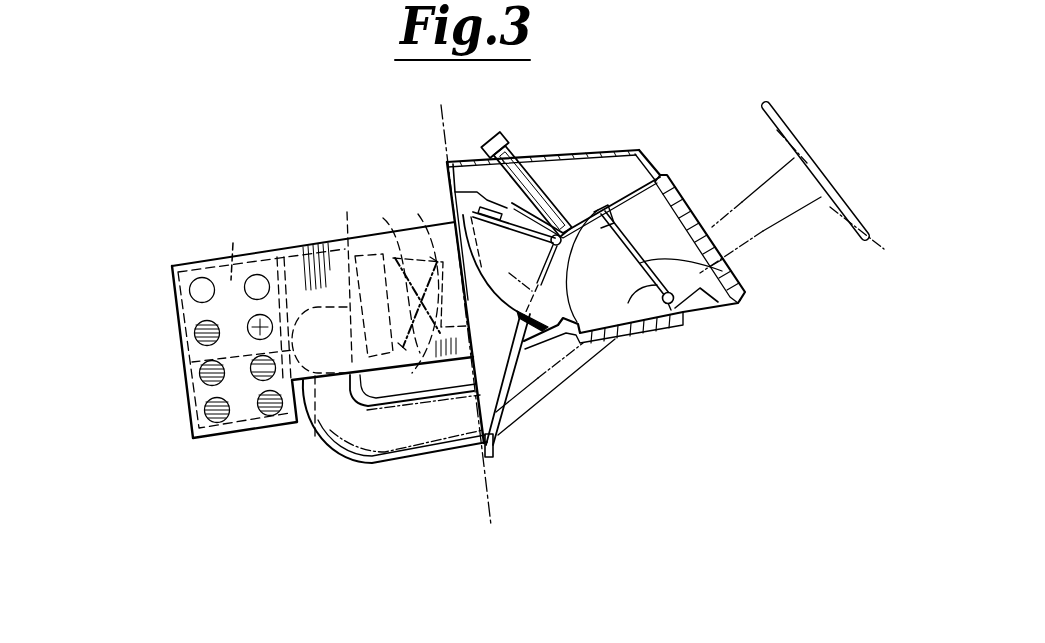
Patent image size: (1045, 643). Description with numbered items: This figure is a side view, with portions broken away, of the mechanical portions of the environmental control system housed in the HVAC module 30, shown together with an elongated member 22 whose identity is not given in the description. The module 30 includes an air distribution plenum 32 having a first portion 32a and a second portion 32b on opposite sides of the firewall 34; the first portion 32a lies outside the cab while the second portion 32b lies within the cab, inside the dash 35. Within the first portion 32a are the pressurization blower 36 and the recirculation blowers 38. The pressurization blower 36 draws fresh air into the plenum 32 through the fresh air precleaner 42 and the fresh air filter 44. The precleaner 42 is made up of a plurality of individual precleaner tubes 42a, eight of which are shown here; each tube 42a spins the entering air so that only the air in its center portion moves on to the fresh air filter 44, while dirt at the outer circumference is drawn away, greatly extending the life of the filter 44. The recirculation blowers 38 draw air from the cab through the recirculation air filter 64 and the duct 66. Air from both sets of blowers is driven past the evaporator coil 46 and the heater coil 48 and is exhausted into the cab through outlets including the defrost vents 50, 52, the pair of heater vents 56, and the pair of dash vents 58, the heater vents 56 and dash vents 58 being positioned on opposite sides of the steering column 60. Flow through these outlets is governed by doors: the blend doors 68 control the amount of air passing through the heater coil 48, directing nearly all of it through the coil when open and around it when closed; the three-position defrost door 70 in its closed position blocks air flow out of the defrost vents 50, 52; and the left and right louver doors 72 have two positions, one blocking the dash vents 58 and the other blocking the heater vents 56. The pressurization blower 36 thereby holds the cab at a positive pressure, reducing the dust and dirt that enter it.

The steering shaft 22 is at (884, 249).
The HVAC module 30 is at (171, 499).
The air distribution plenum 32 is at (175, 332).
The first portion of plenum 32a is at (300, 246).
The second portion of plenum 32b is at (617, 203).
The firewall 34 is at (480, 512).
The dash 35 is at (628, 150).
The pressurization blower 36 is at (233, 243).
The recirculation blowers 38 is at (314, 440).
The fresh air precleaner 42 is at (192, 362).
The precleaner tubes 42a is at (247, 285).
The fresh air filter 44 is at (176, 291).
The evaporator coil 46 is at (349, 237).
The heater coil 48 is at (418, 216).
The defrost vent 50 is at (497, 131).
The defrost vent 52 is at (484, 140).
The heater vents 56 is at (640, 338).
The dash vents 58 is at (684, 197).
The steering column 60 is at (766, 234).
The recirculation air filter 64 is at (497, 449).
The duct 66 is at (398, 465).
The blend doors 68 is at (385, 219).
The defrost door 70 is at (525, 234).
The louver doors 72 is at (670, 282).